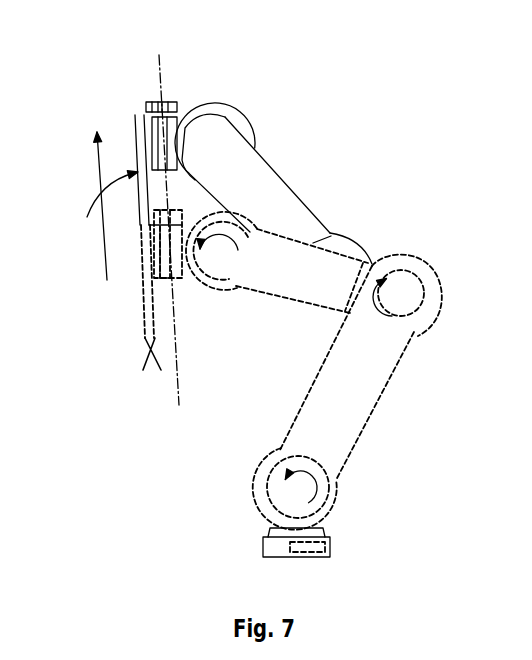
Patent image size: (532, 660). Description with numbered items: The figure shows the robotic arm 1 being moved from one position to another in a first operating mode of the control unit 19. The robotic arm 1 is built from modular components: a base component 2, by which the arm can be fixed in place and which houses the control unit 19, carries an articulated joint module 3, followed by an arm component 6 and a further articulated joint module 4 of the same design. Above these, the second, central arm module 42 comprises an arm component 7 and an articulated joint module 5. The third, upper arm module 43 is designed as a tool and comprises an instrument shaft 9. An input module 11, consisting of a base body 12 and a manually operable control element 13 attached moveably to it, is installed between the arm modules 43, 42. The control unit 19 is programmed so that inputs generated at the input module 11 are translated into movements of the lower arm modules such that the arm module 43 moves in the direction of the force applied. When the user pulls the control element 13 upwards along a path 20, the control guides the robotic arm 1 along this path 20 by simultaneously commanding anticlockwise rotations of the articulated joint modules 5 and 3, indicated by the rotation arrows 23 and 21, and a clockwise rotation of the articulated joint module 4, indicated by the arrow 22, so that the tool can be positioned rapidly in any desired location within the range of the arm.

The robotic arm 1 is at (367, 190).
The base component 2 is at (273, 547).
The articulated joint module 3 is at (333, 496).
The articulated joint module 4 is at (417, 263).
The articulated joint module 5 is at (235, 112).
The arm component 6 is at (365, 367).
The arm component 7 is at (260, 190).
The instrument shaft 9 is at (145, 309).
The input module 11 is at (183, 92).
The base body 12 is at (160, 132).
The control element 13 is at (155, 103).
The control unit 19 is at (325, 545).
The path 20 is at (177, 383).
The rotation direction 21 is at (317, 480).
The rotation direction 22 is at (378, 303).
The rotation direction 23 is at (222, 232).
The second, central arm module 42 is at (300, 185).
The third, upper arm module 43 is at (95, 204).